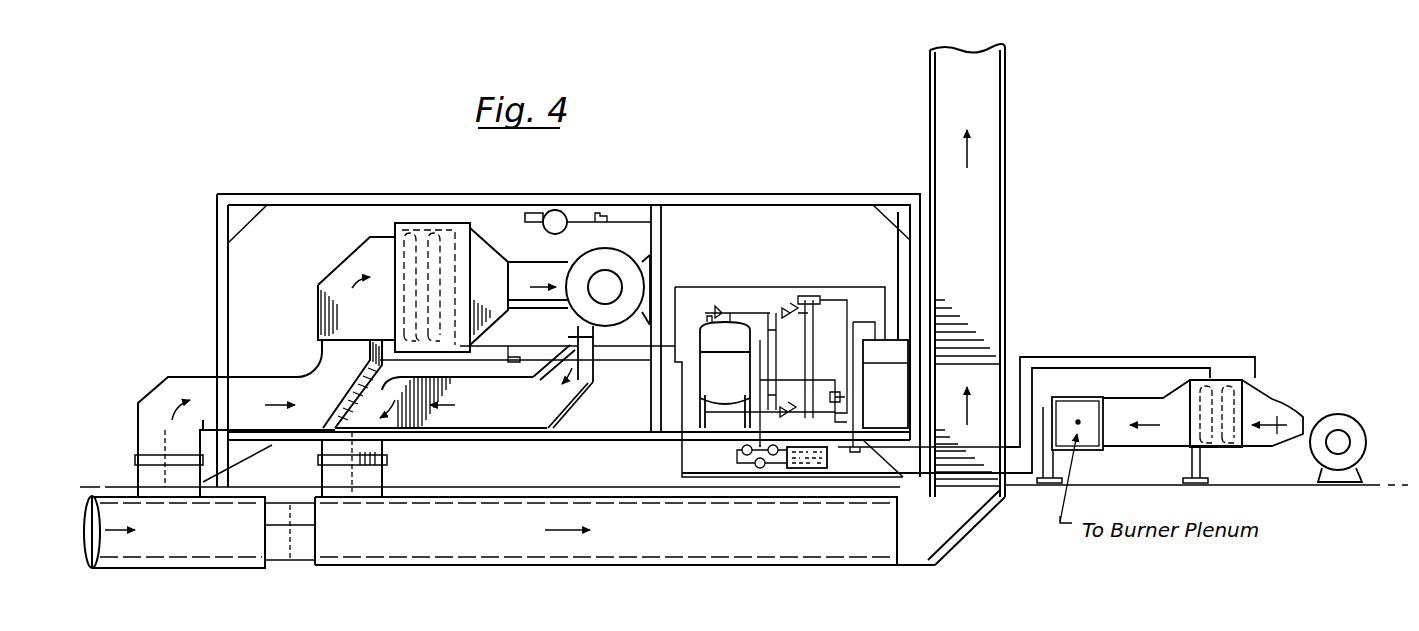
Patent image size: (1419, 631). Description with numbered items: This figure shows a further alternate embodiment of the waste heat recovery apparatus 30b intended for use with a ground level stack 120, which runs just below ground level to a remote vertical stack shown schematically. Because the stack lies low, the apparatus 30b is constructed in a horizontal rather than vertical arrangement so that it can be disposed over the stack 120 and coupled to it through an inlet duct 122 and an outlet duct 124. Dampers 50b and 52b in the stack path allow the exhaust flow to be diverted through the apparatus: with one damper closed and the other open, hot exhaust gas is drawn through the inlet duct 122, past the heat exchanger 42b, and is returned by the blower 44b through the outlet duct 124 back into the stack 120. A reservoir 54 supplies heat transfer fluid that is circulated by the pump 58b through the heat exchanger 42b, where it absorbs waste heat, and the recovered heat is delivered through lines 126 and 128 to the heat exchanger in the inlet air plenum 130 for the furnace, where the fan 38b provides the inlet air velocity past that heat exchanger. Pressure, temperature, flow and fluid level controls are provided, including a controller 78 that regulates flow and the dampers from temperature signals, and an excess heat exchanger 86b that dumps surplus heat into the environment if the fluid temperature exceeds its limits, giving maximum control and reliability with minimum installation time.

The apparatus 30b is at (803, 194).
The heat exchanger 42b is at (413, 228).
The blower 44b is at (613, 250).
The pump 58b is at (557, 210).
The inlet duct 122 is at (320, 356).
The outlet duct 124 is at (553, 400).
The reservoir 54 is at (700, 372).
The controller 78 is at (903, 410).
The excess heat exchanger 86b is at (812, 470).
The damper 52b is at (365, 492).
The damper 50b is at (289, 568).
The stack 120 is at (866, 568).
The line 128 is at (1211, 357).
The line 126 is at (1100, 368).
The inlet air plenum 130 is at (1265, 397).
The fan 38b is at (1352, 433).